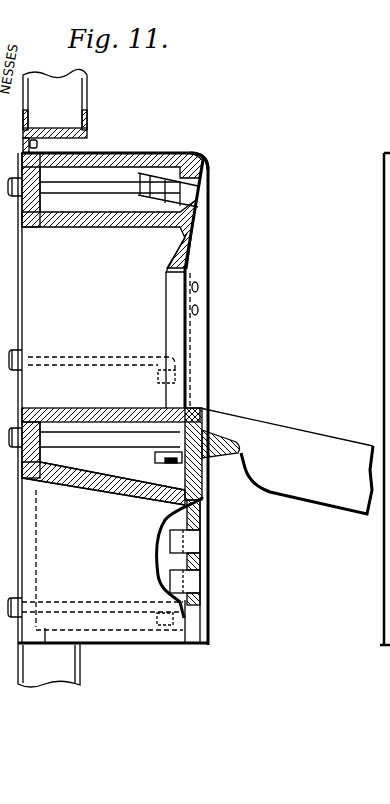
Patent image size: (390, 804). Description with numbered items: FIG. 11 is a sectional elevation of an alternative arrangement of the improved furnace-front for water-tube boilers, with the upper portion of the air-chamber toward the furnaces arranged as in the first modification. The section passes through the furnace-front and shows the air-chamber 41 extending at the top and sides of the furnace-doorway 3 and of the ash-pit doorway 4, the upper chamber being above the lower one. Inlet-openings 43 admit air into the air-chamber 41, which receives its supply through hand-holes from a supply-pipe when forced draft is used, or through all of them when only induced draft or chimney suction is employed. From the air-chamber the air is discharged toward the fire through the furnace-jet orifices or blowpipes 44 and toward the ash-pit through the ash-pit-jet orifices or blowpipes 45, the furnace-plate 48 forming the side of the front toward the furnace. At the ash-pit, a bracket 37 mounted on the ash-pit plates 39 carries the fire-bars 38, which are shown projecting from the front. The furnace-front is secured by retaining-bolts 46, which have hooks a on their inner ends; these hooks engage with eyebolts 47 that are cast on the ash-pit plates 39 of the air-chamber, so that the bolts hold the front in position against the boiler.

The furnace-doorway 3 is at (108, 357).
The ash-pit doorway 4 is at (110, 588).
The bracket 37 is at (233, 447).
The fire-bars 38 is at (286, 461).
The ash-pit plates 39 is at (203, 411).
The air-chamber 41 is at (84, 207).
The inlet-openings 43 is at (107, 645).
The furnace-jet orifices or blowpipes 44 is at (200, 212).
The ash-pit-jet orifices or blowpipes 45 is at (204, 578).
The retaining-bolts 46 is at (107, 188).
The eyebolts 47 is at (155, 457).
The furnace-plate 48 is at (208, 160).
The hooks a is at (162, 375).